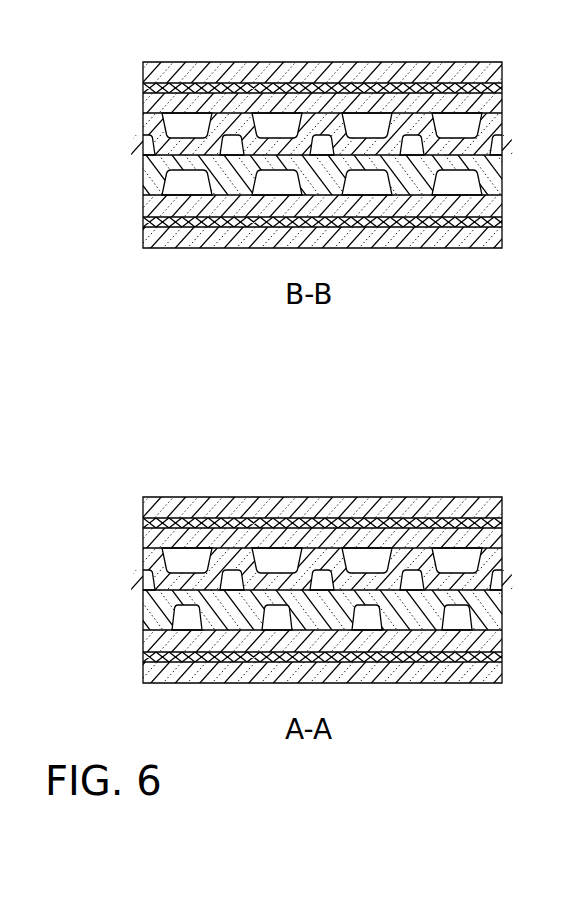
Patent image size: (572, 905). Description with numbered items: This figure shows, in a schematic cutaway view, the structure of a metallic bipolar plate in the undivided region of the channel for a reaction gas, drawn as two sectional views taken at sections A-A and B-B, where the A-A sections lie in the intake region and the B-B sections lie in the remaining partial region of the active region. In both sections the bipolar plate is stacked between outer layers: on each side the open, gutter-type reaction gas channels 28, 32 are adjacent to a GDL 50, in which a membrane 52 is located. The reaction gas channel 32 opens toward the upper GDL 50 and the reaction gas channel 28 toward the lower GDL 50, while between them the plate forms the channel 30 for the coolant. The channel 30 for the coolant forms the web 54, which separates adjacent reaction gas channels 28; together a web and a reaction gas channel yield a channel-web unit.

The reaction gas channel 28 is at (460, 618).
The channel for the coolant 30 is at (413, 580).
The reaction gas channel 32 is at (370, 560).
The GDL 50 is at (487, 643).
The membrane 52 is at (148, 657).
The web 54 is at (323, 630).